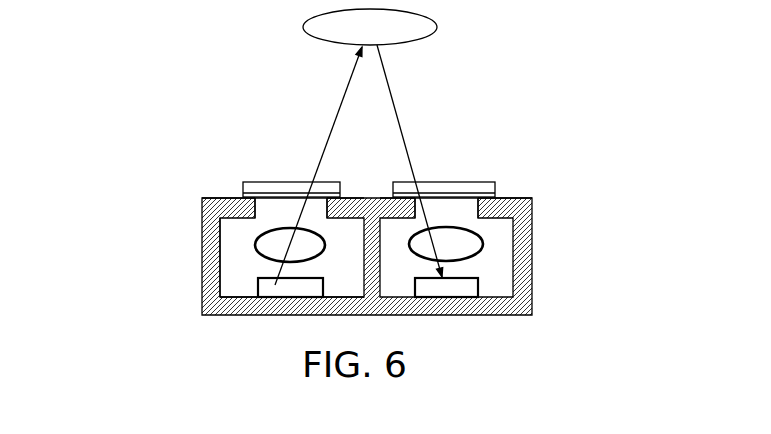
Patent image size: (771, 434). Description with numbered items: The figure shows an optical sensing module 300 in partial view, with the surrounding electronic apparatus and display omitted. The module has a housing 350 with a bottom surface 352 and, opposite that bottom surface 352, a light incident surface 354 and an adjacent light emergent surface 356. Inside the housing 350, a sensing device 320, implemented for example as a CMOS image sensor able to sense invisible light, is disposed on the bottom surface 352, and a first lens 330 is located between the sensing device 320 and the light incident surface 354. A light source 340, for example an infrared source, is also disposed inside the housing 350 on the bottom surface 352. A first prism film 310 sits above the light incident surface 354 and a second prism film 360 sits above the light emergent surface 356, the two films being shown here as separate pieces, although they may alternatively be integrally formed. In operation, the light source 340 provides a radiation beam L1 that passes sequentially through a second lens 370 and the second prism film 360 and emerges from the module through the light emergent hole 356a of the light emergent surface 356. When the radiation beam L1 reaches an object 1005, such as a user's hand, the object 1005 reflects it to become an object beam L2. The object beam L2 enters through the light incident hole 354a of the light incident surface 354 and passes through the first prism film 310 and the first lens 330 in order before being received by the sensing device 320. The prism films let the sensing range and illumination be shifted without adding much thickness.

The optical sensing module 300 is at (415, 206).
The first prism film 310 is at (448, 183).
The sensing device 320 is at (469, 288).
The first lens 330 is at (462, 240).
The light source 340 is at (265, 285).
The housing 350 is at (205, 243).
The bottom surface 352 is at (233, 292).
The light incident surface 354 is at (518, 195).
The light incident hole 354a is at (445, 203).
The light emergent surface 356 is at (228, 195).
The light emergent hole 356a is at (283, 203).
The second prism film 360 is at (302, 182).
The second lens 370 is at (273, 242).
The object 1005 is at (413, 13).
The radiation beam L1 is at (344, 90).
The object beam L2 is at (392, 88).